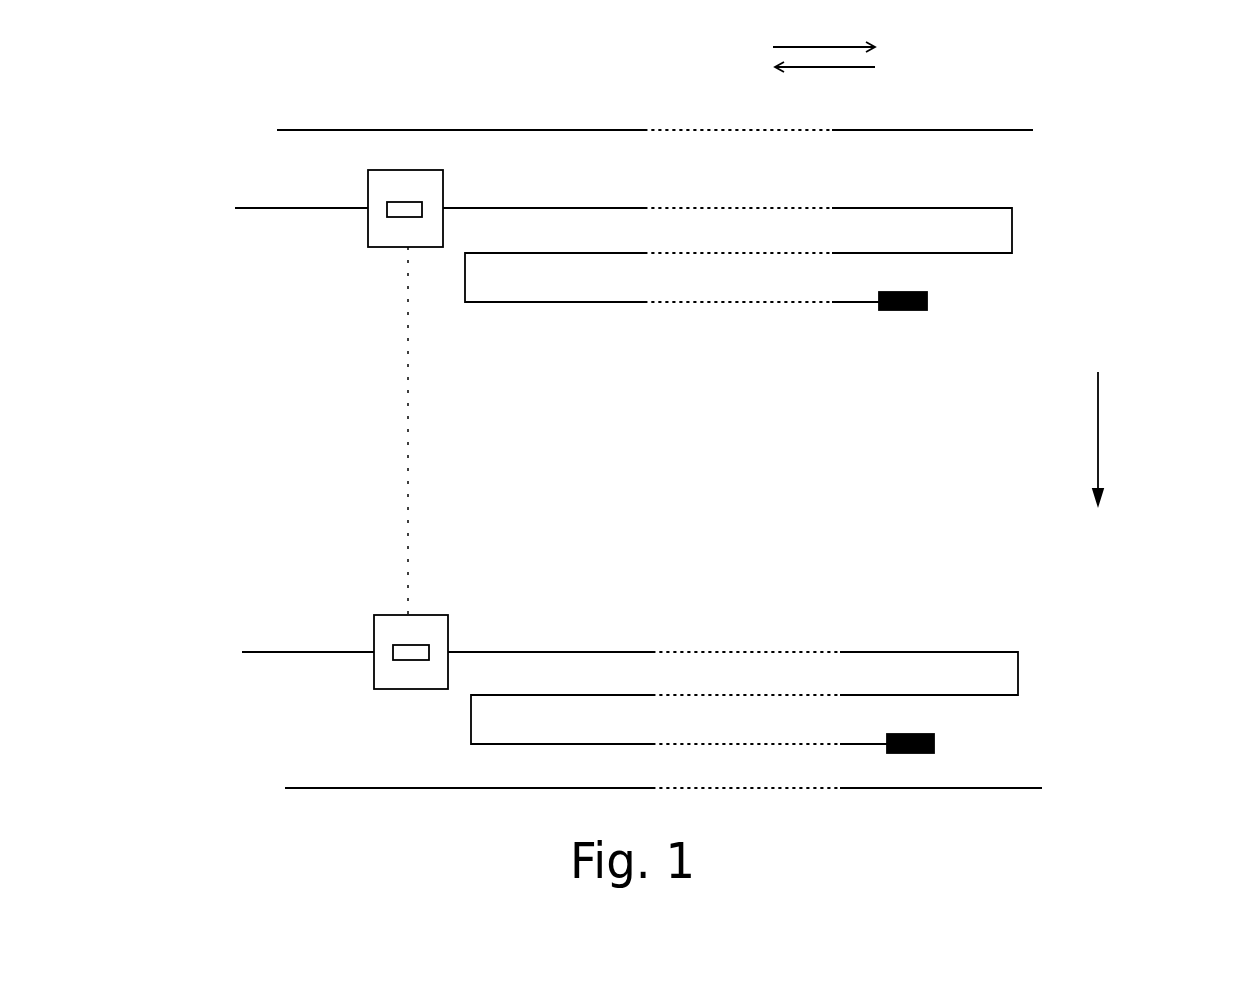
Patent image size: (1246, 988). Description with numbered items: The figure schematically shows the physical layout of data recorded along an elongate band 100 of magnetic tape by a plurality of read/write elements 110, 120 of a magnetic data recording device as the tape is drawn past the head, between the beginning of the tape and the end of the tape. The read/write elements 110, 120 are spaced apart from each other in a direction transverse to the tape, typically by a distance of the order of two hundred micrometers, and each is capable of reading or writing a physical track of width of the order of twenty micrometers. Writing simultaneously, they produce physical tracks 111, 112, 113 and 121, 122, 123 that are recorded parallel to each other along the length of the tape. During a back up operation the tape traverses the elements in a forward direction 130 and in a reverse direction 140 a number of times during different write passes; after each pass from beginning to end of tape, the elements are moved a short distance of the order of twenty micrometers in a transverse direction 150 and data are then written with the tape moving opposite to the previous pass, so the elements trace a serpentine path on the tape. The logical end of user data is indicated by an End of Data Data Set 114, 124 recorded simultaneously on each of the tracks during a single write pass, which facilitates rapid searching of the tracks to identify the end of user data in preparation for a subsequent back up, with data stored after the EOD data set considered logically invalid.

The elongate band of magnetic tape 100 is at (518, 130).
The read/write element 110 is at (339, 378).
The physical track 111 is at (727, 217).
The physical track 112 is at (648, 265).
The physical track 113 is at (692, 289).
The End of Data Data Set 114 is at (903, 301).
The read/write element 120 is at (345, 637).
The physical track 121 is at (733, 660).
The physical track 122 is at (655, 708).
The physical track 123 is at (700, 731).
The End of Data Data Set 124 is at (910, 743).
The forward direction 130 is at (824, 38).
The reverse direction 140 is at (825, 77).
The transverse direction 150 is at (1165, 438).